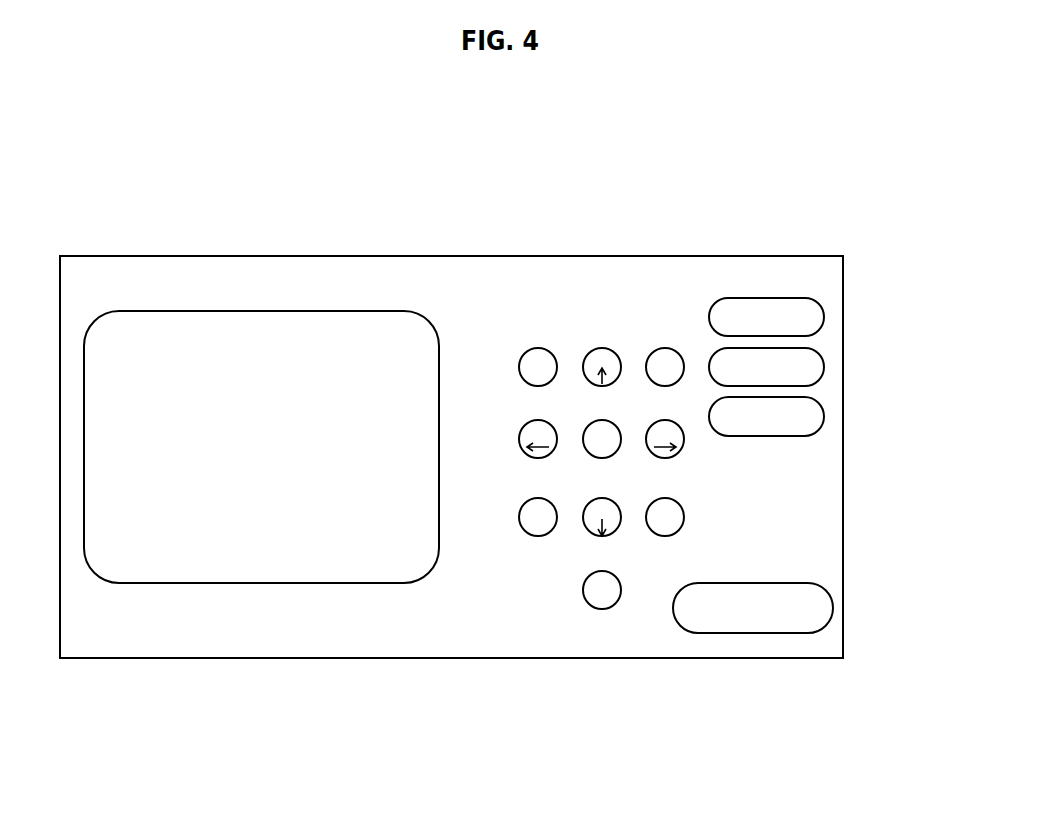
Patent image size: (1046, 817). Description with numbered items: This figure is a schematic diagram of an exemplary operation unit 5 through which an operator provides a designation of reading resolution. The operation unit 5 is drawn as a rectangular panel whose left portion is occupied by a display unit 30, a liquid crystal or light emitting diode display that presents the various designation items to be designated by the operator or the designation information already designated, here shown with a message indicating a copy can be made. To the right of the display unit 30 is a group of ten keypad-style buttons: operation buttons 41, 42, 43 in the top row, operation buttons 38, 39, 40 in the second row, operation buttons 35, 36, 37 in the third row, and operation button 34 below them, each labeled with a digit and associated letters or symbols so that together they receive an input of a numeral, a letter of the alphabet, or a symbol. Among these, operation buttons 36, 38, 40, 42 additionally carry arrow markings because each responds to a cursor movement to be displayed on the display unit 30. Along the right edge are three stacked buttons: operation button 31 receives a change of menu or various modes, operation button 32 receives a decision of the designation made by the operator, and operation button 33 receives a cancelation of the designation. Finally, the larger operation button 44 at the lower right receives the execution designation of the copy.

The operation unit 5 is at (352, 658).
The display unit 30 is at (165, 585).
The operation button 31 is at (824, 312).
The operation button 32 is at (824, 362).
The operation button 33 is at (824, 411).
The operation button 34 is at (599, 609).
The operation button 35 is at (519, 523).
The operation button 36 is at (587, 529).
The operation button 37 is at (684, 519).
The operation button 38 is at (519, 447).
The operation button 39 is at (621, 448).
The operation button 40 is at (684, 441).
The operation button 41 is at (538, 348).
The operation button 42 is at (602, 348).
The operation button 43 is at (665, 348).
The operation button 44 is at (833, 603).